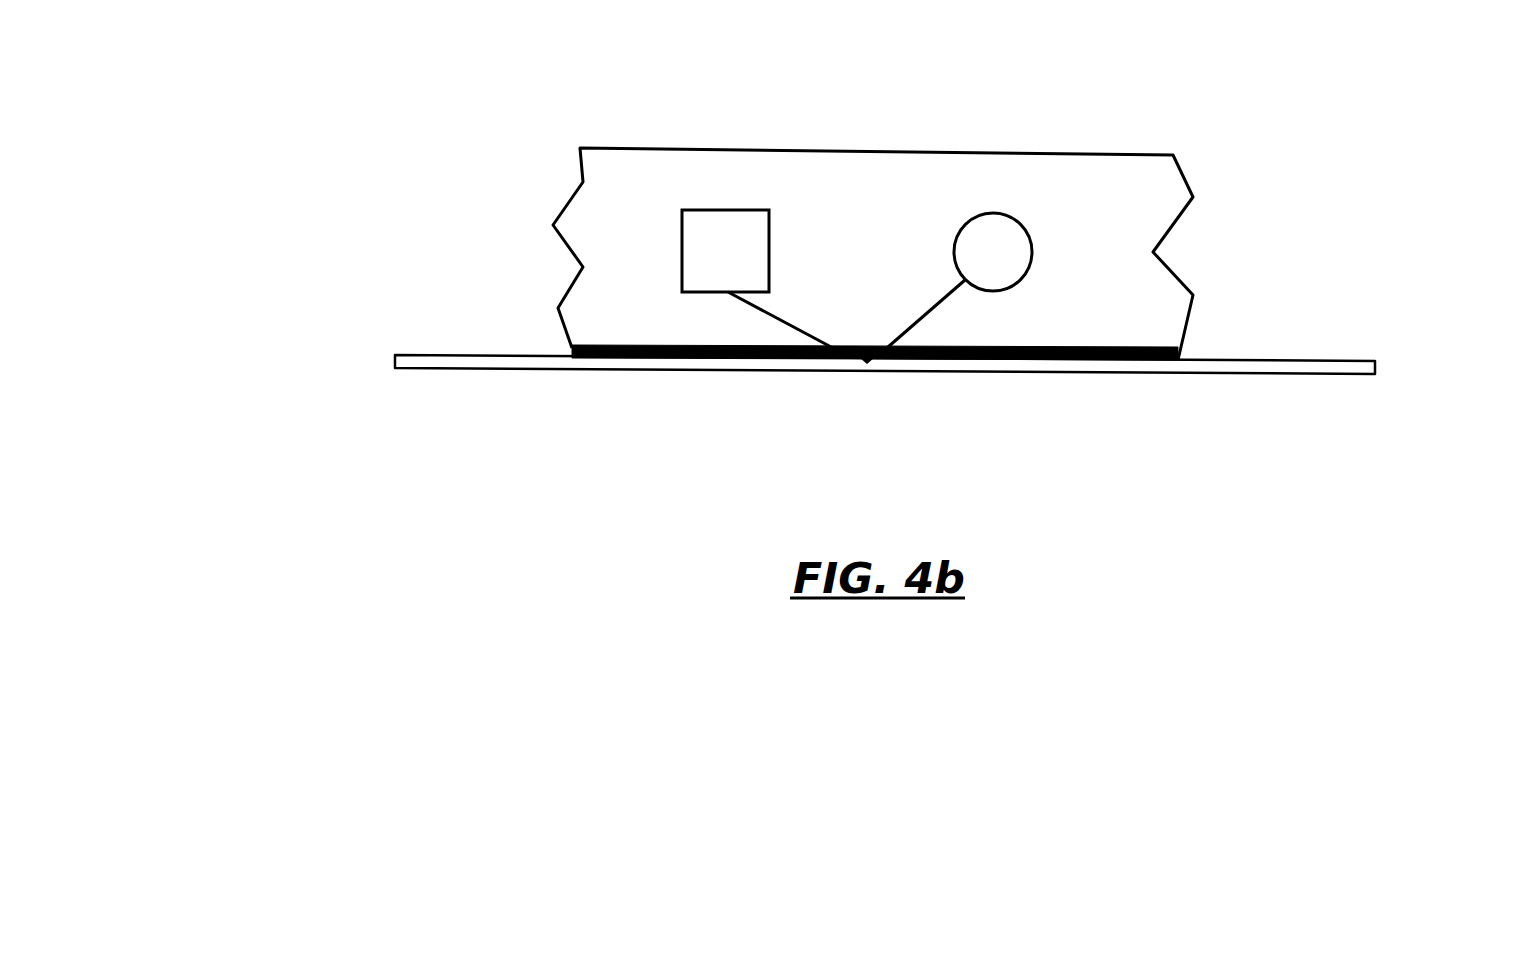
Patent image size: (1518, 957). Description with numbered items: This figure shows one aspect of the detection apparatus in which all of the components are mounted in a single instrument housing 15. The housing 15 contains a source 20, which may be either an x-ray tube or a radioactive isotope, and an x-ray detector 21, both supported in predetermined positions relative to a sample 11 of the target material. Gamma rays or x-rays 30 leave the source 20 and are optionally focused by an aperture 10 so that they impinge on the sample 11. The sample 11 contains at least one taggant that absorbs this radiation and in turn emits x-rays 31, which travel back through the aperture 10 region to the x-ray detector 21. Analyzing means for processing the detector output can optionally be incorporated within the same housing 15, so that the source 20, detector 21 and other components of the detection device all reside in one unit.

The aperture 10 is at (1107, 348).
The sample 11 is at (477, 353).
The instrument housing 15 is at (843, 162).
The source 20 is at (1000, 253).
The x-ray detector 21 is at (712, 245).
The gamma rays or x-rays 30 is at (932, 310).
The x-rays 31 is at (767, 312).